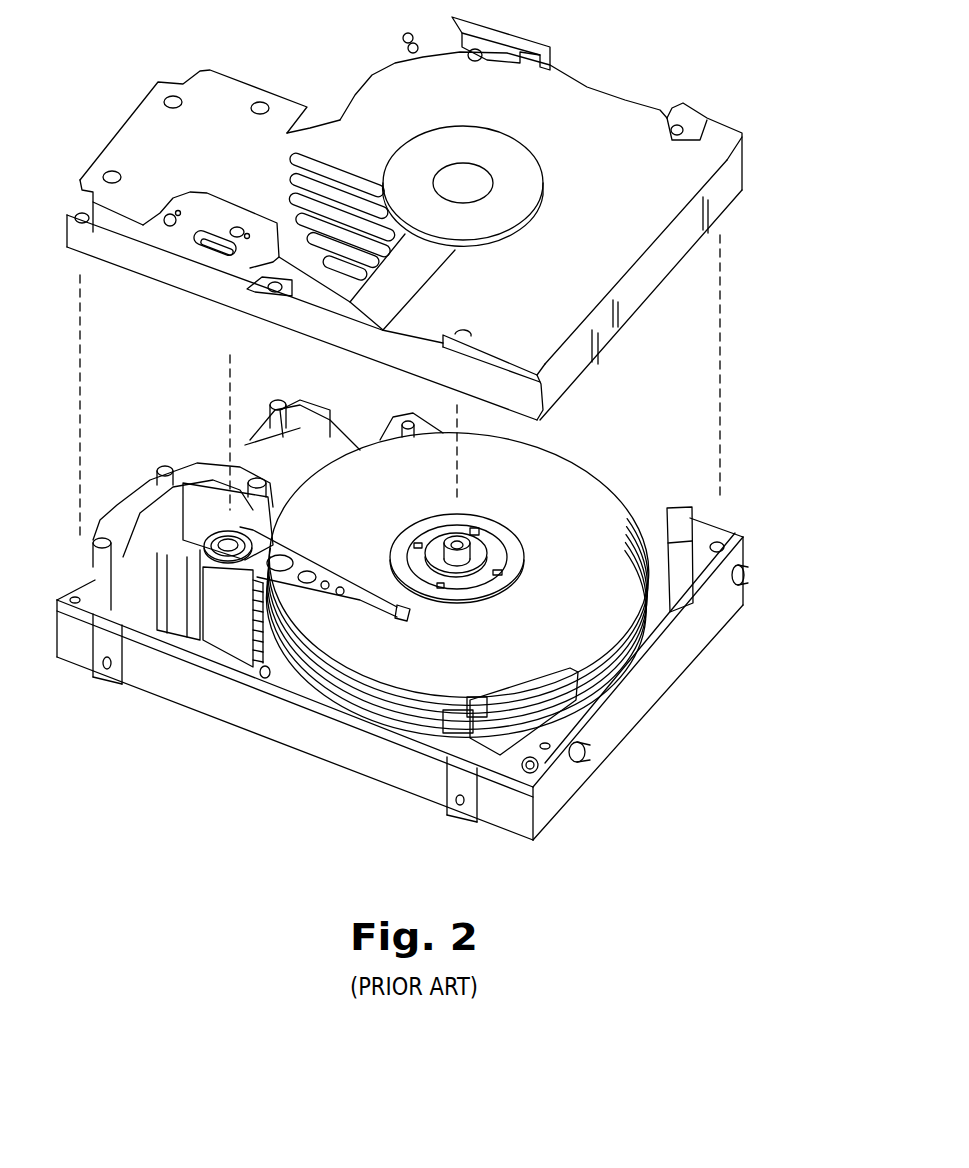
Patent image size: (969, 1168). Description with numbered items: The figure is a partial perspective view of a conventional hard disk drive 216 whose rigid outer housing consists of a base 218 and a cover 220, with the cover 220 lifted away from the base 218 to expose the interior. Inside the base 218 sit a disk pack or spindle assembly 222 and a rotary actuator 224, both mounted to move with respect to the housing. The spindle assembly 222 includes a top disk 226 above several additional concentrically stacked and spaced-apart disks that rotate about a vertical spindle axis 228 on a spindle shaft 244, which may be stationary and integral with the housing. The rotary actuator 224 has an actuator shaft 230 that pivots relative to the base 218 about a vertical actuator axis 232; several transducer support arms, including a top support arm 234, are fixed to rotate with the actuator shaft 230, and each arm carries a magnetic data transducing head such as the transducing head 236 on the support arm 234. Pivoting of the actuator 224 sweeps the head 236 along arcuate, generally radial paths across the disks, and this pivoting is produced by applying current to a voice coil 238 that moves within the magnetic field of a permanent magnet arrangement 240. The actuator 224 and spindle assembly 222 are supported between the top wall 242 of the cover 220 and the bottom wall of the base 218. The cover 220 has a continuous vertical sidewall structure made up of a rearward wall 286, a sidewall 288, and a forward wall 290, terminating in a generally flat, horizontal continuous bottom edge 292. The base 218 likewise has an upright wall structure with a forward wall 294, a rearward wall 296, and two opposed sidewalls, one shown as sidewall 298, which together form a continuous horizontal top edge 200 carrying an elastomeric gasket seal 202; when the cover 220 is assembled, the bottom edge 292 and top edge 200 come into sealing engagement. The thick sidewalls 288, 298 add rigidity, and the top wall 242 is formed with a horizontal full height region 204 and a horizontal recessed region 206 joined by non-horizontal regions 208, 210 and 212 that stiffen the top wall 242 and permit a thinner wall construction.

The top edge 200 is at (720, 530).
The elastomeric gasket seal 202 is at (640, 663).
The full height region 204 is at (212, 92).
The recessed region 206 is at (698, 183).
The non-horizontal region 208 is at (508, 237).
The non-horizontal region 210 is at (412, 277).
The non-horizontal region 212 is at (310, 137).
The hard disk drive 216 is at (116, 100).
The base 218 is at (677, 653).
The cover 220 is at (587, 93).
The spindle assembly 222 is at (626, 478).
The rotary actuator 224 is at (227, 630).
The top disk 226 is at (560, 477).
The spindle axis 228 is at (453, 489).
The actuator shaft 230 is at (240, 543).
The actuator axis 232 is at (232, 390).
The top support arm 234 is at (333, 595).
The transducing head 236 is at (407, 620).
The voice coil 238 is at (117, 520).
The permanent magnet arrangement 240 is at (200, 483).
The top wall 242 is at (362, 98).
The spindle shaft 244 is at (467, 553).
The rearward wall 286 is at (643, 290).
The sidewall 288 is at (147, 263).
The forward wall 290 is at (100, 157).
The bottom edge 292 is at (342, 353).
The forward wall 294 is at (70, 580).
The rearward wall 296 is at (612, 740).
The sidewall 298 is at (293, 735).